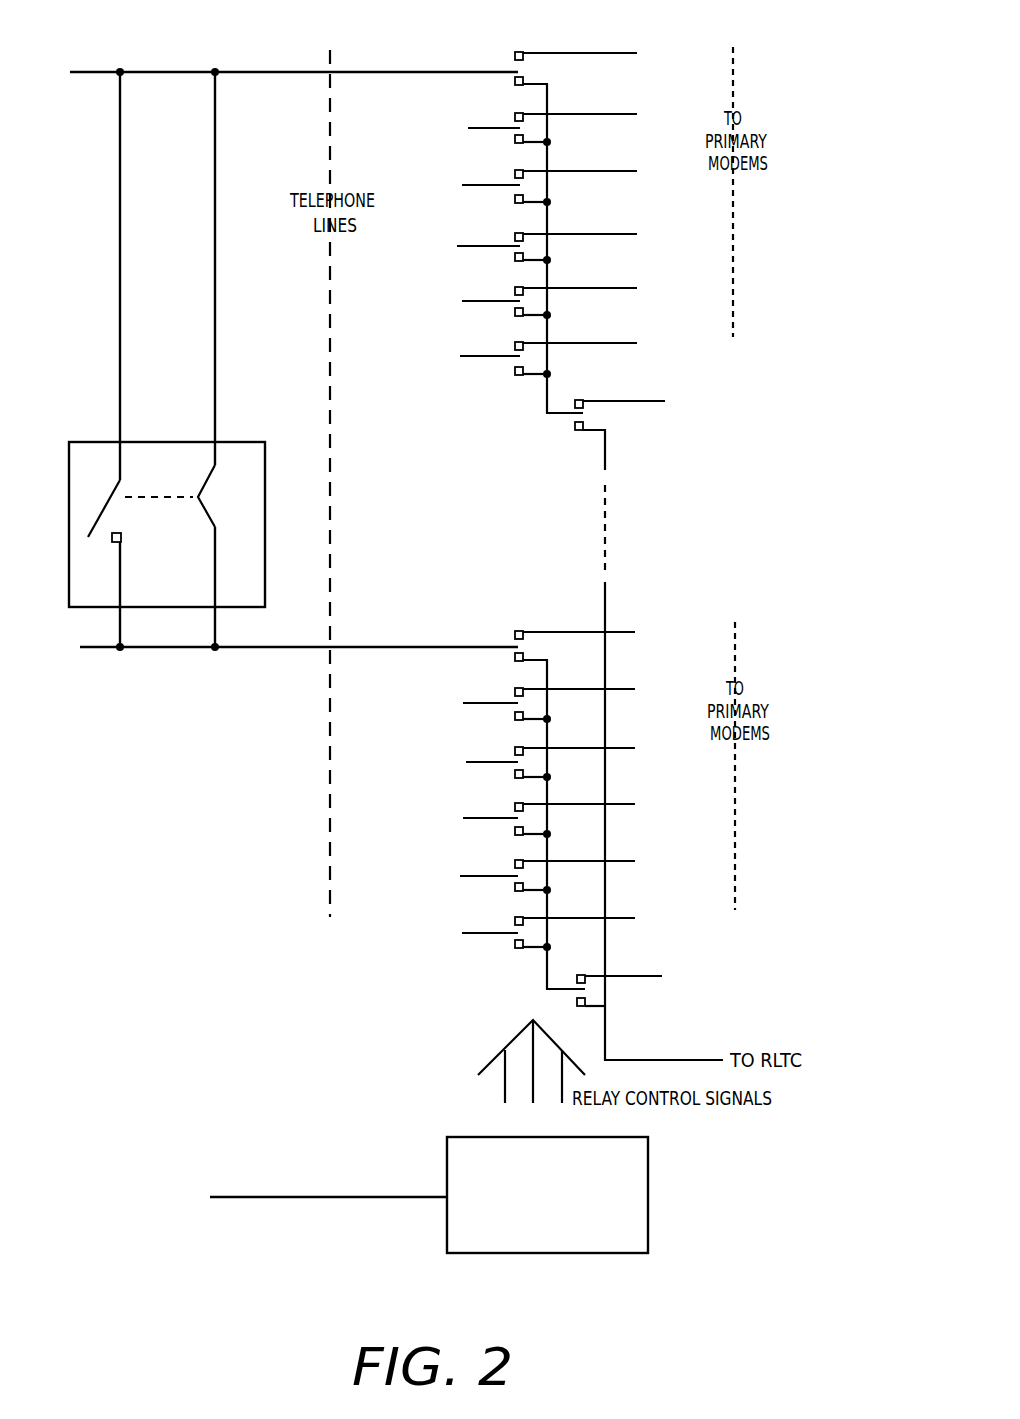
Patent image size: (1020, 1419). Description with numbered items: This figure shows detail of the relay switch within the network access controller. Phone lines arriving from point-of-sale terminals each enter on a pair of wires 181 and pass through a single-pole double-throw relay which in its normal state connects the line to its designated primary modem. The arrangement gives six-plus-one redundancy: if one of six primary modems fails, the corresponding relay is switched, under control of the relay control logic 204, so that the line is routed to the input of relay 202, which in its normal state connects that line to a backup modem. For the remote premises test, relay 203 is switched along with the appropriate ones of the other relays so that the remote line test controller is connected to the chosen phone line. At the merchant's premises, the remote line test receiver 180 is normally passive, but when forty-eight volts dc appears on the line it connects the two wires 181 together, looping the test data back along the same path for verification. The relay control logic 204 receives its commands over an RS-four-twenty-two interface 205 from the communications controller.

The remote line test receiver (RLTR) 180 is at (240, 442).
The wires of the phone line 181 is at (276, 70).
The relay 202 is at (587, 397).
The relay 203 is at (583, 975).
The relay control logic 204 is at (470, 1136).
The RS-422 interface 205 is at (233, 1196).